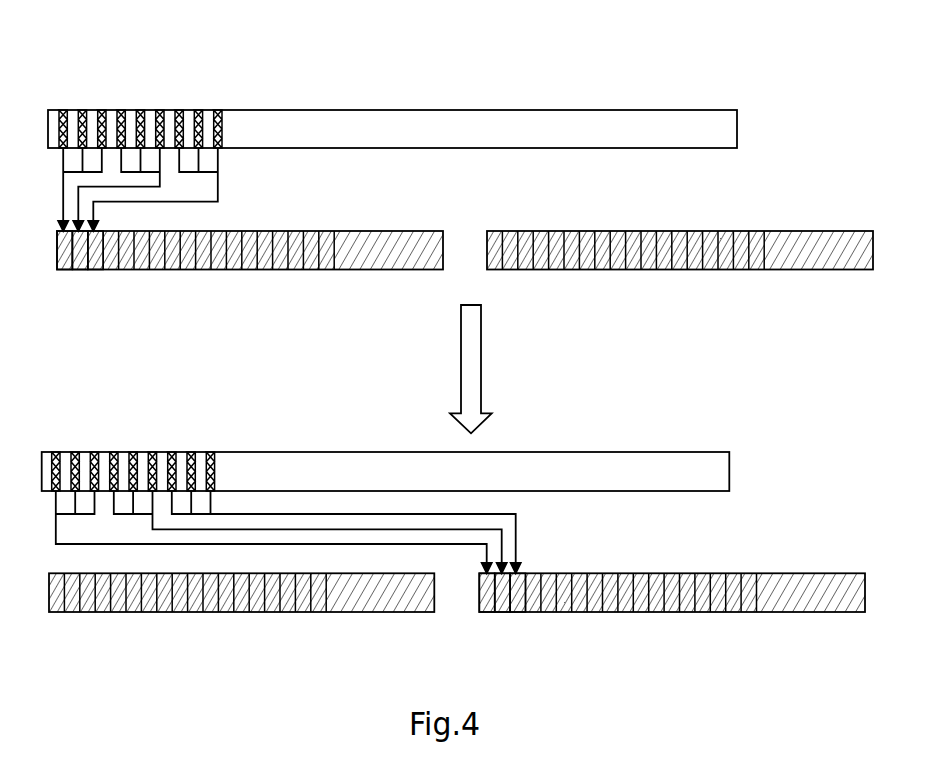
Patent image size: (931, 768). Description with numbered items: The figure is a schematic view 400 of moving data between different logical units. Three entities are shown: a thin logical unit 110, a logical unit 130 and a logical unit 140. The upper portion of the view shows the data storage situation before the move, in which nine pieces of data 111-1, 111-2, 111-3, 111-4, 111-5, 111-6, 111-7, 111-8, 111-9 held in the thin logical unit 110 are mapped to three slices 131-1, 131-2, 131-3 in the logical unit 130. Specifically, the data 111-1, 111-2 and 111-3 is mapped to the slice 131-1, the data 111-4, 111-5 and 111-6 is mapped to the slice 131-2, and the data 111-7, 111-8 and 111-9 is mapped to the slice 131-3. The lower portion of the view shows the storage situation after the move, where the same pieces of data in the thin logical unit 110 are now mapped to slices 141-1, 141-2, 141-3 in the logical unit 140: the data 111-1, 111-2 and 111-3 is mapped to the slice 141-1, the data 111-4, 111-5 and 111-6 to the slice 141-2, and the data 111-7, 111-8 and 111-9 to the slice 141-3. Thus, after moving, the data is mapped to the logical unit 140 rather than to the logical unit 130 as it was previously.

The schematic view 400 is at (411, 42).
The thin logical unit 110 is at (670, 110).
The data 111-1 is at (63, 109).
The data 111-2 is at (82, 109).
The data 111-3 is at (102, 109).
The data 111-4 is at (121, 109).
The data 111-5 is at (140, 109).
The data 111-6 is at (160, 109).
The data 111-7 is at (179, 109).
The data 111-8 is at (198, 109).
The data 111-9 is at (218, 109).
The logical unit 130 is at (377, 231).
The slice 131-1 is at (65, 270).
The slice 131-2 is at (80, 270).
The slice 131-3 is at (92, 270).
The logical unit 140 is at (810, 231).
The slice 141-1 is at (488, 612).
The slice 141-2 is at (502, 612).
The slice 141-3 is at (515, 612).